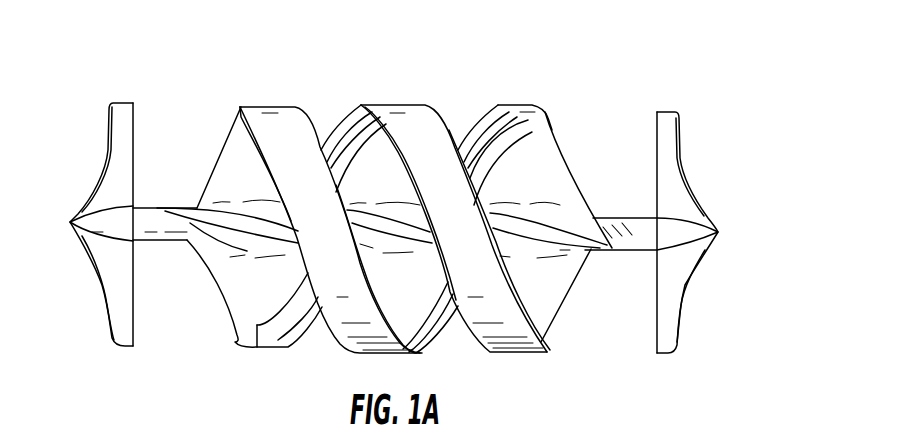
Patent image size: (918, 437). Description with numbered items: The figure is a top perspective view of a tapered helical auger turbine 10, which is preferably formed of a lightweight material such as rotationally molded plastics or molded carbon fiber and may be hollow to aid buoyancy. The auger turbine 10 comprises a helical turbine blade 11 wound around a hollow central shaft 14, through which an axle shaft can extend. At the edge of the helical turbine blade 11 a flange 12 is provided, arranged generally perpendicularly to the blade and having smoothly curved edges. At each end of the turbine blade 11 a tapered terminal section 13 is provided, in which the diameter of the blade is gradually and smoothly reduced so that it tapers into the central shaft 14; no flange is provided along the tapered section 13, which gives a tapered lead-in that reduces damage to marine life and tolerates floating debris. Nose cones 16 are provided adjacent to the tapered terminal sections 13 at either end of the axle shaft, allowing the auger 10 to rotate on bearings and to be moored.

The helical auger turbine 10 is at (407, 213).
The helical turbine blade 11 is at (400, 280).
The flange 12 is at (497, 287).
The tapered terminal section 13 is at (558, 182).
The central shaft 14 is at (147, 217).
The nose cone 16 is at (118, 285).